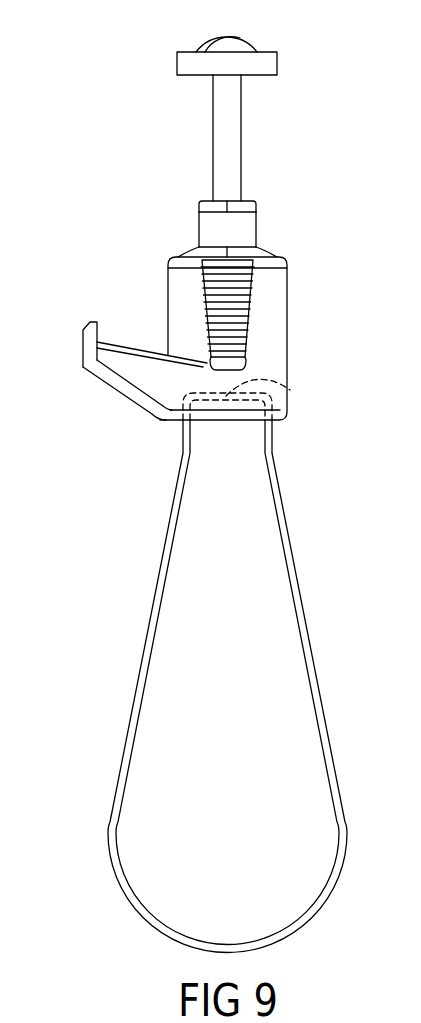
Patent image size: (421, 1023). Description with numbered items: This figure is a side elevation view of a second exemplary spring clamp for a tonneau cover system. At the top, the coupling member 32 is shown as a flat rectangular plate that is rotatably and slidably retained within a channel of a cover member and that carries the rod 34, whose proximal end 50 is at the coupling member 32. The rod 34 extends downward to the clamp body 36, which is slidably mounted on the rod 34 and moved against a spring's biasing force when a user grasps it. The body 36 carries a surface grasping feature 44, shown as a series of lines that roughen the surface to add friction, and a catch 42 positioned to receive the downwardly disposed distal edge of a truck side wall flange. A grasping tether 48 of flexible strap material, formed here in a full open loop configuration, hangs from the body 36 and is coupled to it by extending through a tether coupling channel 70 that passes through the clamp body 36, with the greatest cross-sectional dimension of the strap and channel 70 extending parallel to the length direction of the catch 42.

The coupling member 32 is at (182, 63).
The rod 34 is at (216, 134).
The clamp body 36 is at (272, 358).
The catch 42 is at (147, 348).
The surface grasping feature 44 is at (240, 280).
The grasping tether 48 is at (118, 631).
The proximal end 50 is at (238, 43).
The tether coupling channel 70 is at (290, 390).